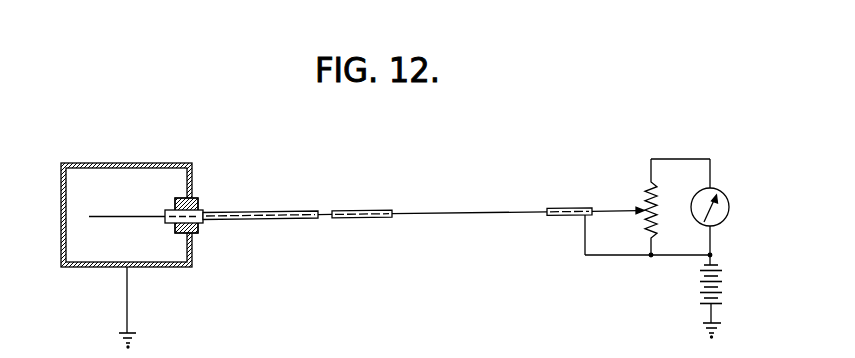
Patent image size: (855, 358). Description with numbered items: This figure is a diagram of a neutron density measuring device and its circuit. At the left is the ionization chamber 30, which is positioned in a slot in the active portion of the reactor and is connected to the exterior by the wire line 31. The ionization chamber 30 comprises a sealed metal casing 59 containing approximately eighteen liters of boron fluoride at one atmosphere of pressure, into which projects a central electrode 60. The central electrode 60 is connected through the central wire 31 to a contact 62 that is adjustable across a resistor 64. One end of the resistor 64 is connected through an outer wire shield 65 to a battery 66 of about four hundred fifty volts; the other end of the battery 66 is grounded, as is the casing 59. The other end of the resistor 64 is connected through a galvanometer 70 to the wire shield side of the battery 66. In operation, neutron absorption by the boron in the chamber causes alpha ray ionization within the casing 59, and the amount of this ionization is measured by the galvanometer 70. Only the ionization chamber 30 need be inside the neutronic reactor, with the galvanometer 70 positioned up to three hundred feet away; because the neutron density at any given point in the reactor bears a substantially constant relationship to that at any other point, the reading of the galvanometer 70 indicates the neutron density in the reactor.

The ionization chamber 30 is at (128, 183).
The sealed metal casing 59 is at (172, 165).
The central electrode 60 is at (99, 213).
The outer wire shield 65 is at (301, 211).
The wire line 31 is at (511, 184).
The contact 62 is at (641, 208).
The resistor 64 is at (652, 199).
The galvanometer 70 is at (722, 196).
The battery 66 is at (722, 290).